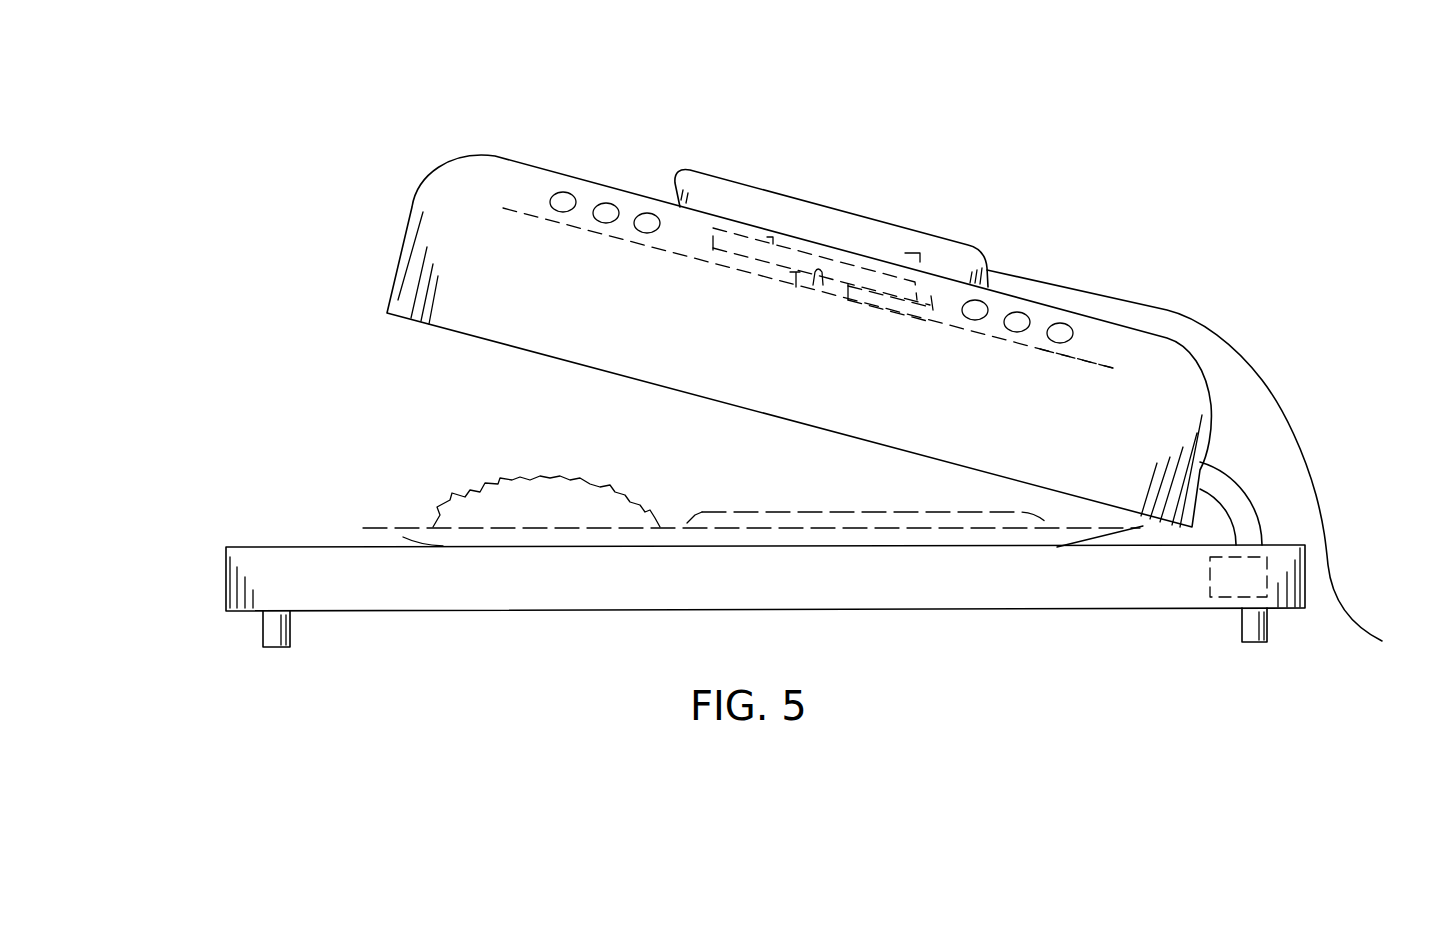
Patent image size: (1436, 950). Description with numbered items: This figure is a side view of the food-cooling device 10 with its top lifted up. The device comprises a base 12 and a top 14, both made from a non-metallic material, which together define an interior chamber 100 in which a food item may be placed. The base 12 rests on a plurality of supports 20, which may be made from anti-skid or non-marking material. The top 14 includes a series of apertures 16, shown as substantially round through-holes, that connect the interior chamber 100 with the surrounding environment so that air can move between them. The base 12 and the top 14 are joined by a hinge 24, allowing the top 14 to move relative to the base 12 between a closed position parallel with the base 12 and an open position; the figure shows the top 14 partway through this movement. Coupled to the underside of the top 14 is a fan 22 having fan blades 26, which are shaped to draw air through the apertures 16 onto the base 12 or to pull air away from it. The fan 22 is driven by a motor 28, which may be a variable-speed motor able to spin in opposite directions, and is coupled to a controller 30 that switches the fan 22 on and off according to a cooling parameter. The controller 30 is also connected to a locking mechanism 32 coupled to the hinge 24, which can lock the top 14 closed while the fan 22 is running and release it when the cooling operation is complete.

The food-cooling device 10 is at (1038, 173).
The base 12 is at (257, 567).
The top 14 is at (465, 178).
The apertures 16 is at (564, 192).
The supports 20 is at (273, 637).
The fan 22 is at (822, 305).
The hinge 24 is at (1213, 485).
The fan blades 26 is at (1112, 364).
The motor 28 is at (807, 250).
The controller 30 is at (753, 220).
The locking mechanism 32 is at (1257, 580).
The interior chamber 100 is at (431, 417).